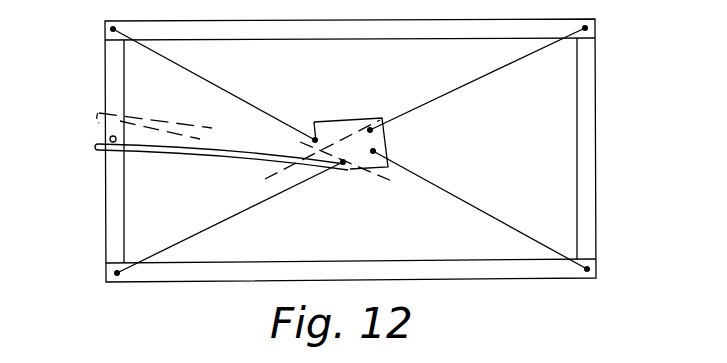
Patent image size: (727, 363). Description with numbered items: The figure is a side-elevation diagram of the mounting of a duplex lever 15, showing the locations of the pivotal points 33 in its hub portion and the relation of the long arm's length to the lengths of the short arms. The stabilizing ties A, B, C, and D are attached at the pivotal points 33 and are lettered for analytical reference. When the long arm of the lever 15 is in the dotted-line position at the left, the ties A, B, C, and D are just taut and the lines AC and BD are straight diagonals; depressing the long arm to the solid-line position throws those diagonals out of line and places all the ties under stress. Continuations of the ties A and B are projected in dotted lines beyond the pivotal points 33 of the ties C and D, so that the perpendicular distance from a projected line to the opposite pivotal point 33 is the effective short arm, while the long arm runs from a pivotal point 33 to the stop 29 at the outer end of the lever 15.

The stop 29 is at (97, 143).
The duplex lever 15 is at (290, 135).
The pivotal points 33 is at (316, 138).
The stabilizing tie A is at (205, 82).
The stabilizing tie B is at (477, 80).
The stabilizing tie C is at (495, 221).
The stabilizing tie D is at (195, 222).